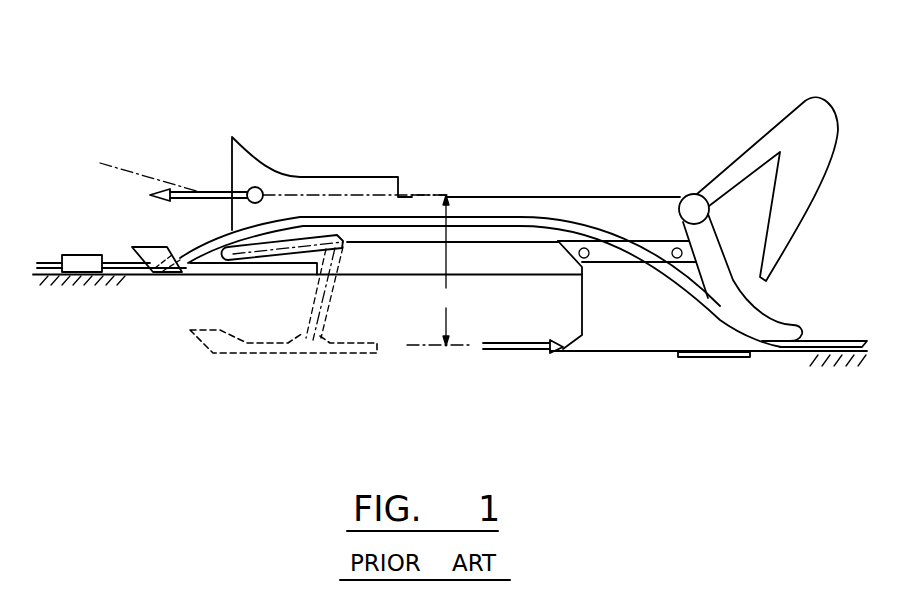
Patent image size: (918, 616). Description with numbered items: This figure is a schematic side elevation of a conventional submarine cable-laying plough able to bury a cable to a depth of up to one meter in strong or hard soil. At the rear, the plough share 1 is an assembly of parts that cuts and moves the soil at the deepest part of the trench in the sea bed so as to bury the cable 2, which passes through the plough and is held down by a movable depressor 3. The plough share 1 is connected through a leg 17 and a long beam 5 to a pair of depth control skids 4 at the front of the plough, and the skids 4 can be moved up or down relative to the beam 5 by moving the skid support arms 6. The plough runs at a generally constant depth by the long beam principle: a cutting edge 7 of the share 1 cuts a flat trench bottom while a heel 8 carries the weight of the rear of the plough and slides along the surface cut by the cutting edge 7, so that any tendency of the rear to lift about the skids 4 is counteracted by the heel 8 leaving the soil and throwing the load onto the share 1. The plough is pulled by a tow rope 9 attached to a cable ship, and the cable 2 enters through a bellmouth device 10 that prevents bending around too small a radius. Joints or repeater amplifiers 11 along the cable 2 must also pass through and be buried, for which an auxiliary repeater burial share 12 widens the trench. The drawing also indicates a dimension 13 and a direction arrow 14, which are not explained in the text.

The plough share 1 is at (630, 317).
The cable 2 is at (197, 255).
The movable depressor 3 is at (728, 298).
The depth control skids 4 is at (173, 270).
The long beam 5 is at (512, 205).
The skid support arms 6 is at (310, 323).
The cutting edge 7 is at (577, 345).
The heel 8 is at (748, 355).
The tow rope 9 is at (198, 192).
The bellmouth device 10 is at (260, 173).
The repeater amplifiers 11 is at (80, 265).
The auxiliary repeater burial share 12 is at (815, 128).
The height distance 13 is at (440, 270).
The direction arrow 14 is at (513, 345).
The leg 17 is at (617, 287).